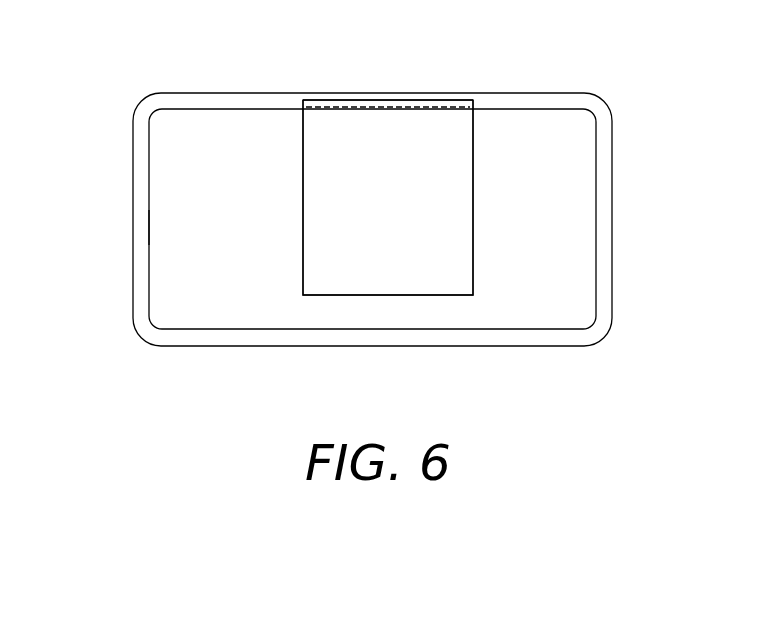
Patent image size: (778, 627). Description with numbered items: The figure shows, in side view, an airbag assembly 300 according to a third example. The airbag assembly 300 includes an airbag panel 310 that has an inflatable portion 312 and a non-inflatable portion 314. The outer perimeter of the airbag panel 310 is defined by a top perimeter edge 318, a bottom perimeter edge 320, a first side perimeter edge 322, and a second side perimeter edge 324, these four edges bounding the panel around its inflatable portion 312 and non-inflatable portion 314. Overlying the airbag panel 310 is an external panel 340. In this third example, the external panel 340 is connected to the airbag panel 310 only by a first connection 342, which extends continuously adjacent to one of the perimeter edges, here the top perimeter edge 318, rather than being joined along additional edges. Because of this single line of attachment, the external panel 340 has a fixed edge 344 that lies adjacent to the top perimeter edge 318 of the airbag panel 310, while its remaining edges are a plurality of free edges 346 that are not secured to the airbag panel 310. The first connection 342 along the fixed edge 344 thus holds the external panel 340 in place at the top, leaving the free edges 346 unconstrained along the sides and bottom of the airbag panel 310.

The airbag assembly 300 is at (121, 33).
The airbag panel 310 is at (133, 150).
The inflatable portion 312 is at (157, 187).
The non-inflatable portion 314 is at (141, 227).
The top perimeter edge 318 is at (537, 93).
The bottom perimeter edge 320 is at (186, 346).
The first side perimeter edge 322 is at (133, 262).
The second side perimeter edge 324 is at (612, 148).
The external panel 340 is at (302, 127).
The first connection 342 is at (440, 106).
The fixed edge 344 is at (388, 100).
The free edges 346 is at (303, 170).